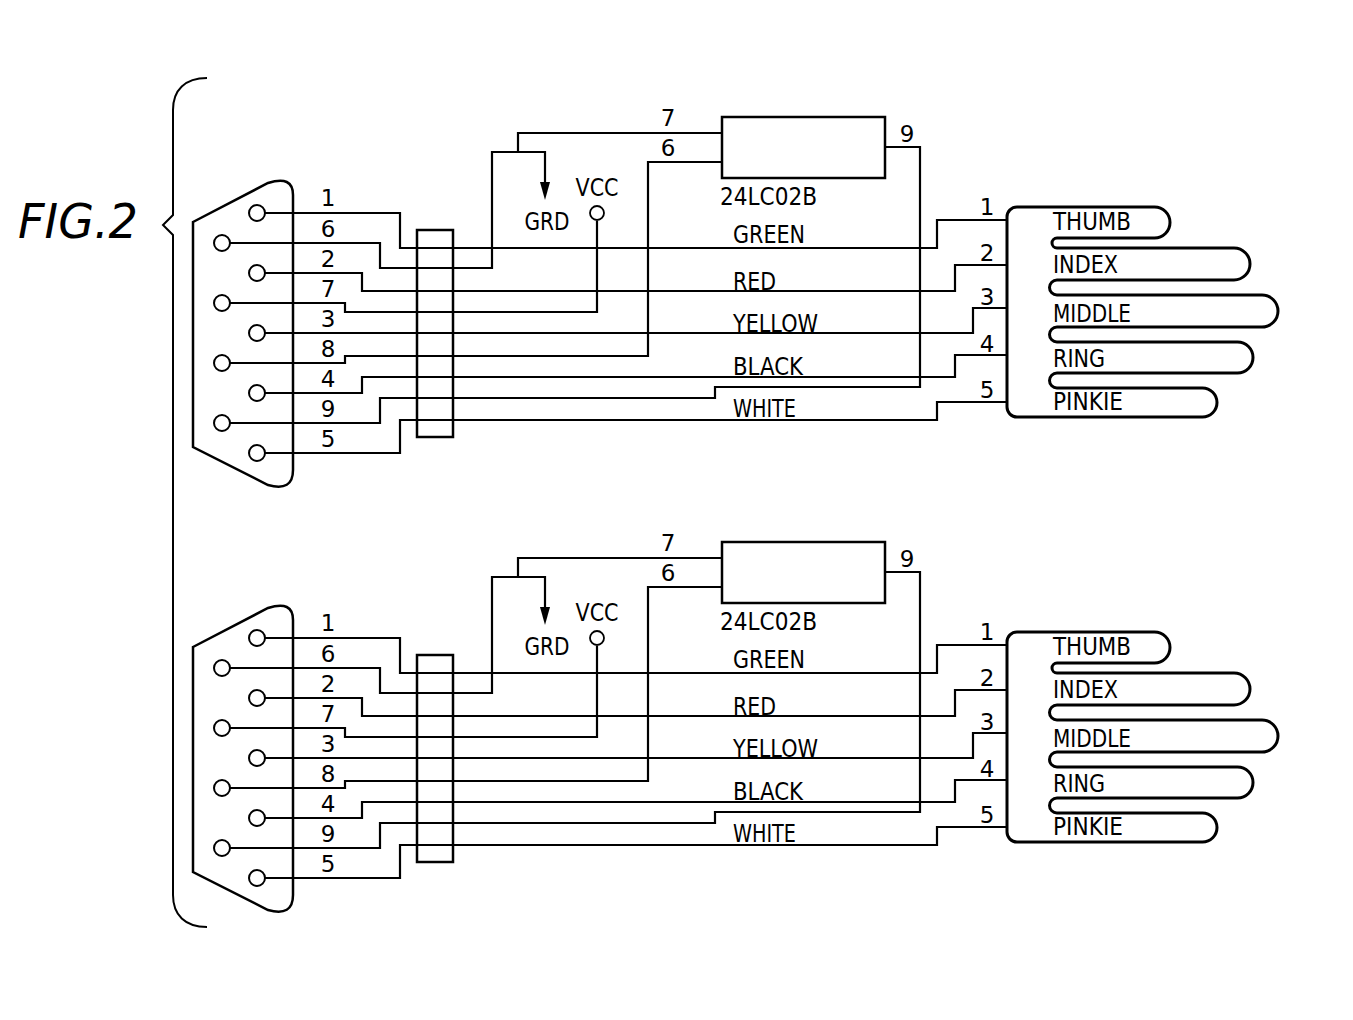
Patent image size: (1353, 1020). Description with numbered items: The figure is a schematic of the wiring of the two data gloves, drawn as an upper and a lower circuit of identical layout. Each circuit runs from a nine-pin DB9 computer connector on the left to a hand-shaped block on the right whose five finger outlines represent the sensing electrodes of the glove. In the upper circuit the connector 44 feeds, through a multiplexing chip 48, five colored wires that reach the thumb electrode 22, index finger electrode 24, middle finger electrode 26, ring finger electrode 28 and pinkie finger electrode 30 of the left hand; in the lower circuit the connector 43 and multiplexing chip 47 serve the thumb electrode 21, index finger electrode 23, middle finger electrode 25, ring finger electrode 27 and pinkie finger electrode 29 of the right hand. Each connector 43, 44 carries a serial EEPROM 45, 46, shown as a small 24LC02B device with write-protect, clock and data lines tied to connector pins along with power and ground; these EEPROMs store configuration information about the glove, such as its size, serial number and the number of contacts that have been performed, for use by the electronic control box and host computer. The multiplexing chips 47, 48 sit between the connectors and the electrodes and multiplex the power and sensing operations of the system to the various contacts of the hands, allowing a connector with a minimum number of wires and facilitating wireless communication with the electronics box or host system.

The thumb electrode 21 is at (1137, 620).
The thumb electrode 22 is at (1162, 222).
The index finger electrode 23 is at (1177, 663).
The index finger electrode 24 is at (1240, 265).
The middle finger electrode 25 is at (1196, 719).
The middle finger electrode 26 is at (1268, 307).
The ring finger electrode 27 is at (1183, 797).
The ring finger electrode 28 is at (1245, 353).
The pinkie finger electrode 29 is at (1167, 849).
The pinkie finger electrode 30 is at (1210, 400).
The connector 43 is at (249, 732).
The connector 44 is at (248, 190).
The serial EEPROM 45 is at (826, 550).
The serial EEPROM 46 is at (862, 116).
The multiplexing chip 47 is at (423, 726).
The multiplexing chip 48 is at (442, 230).